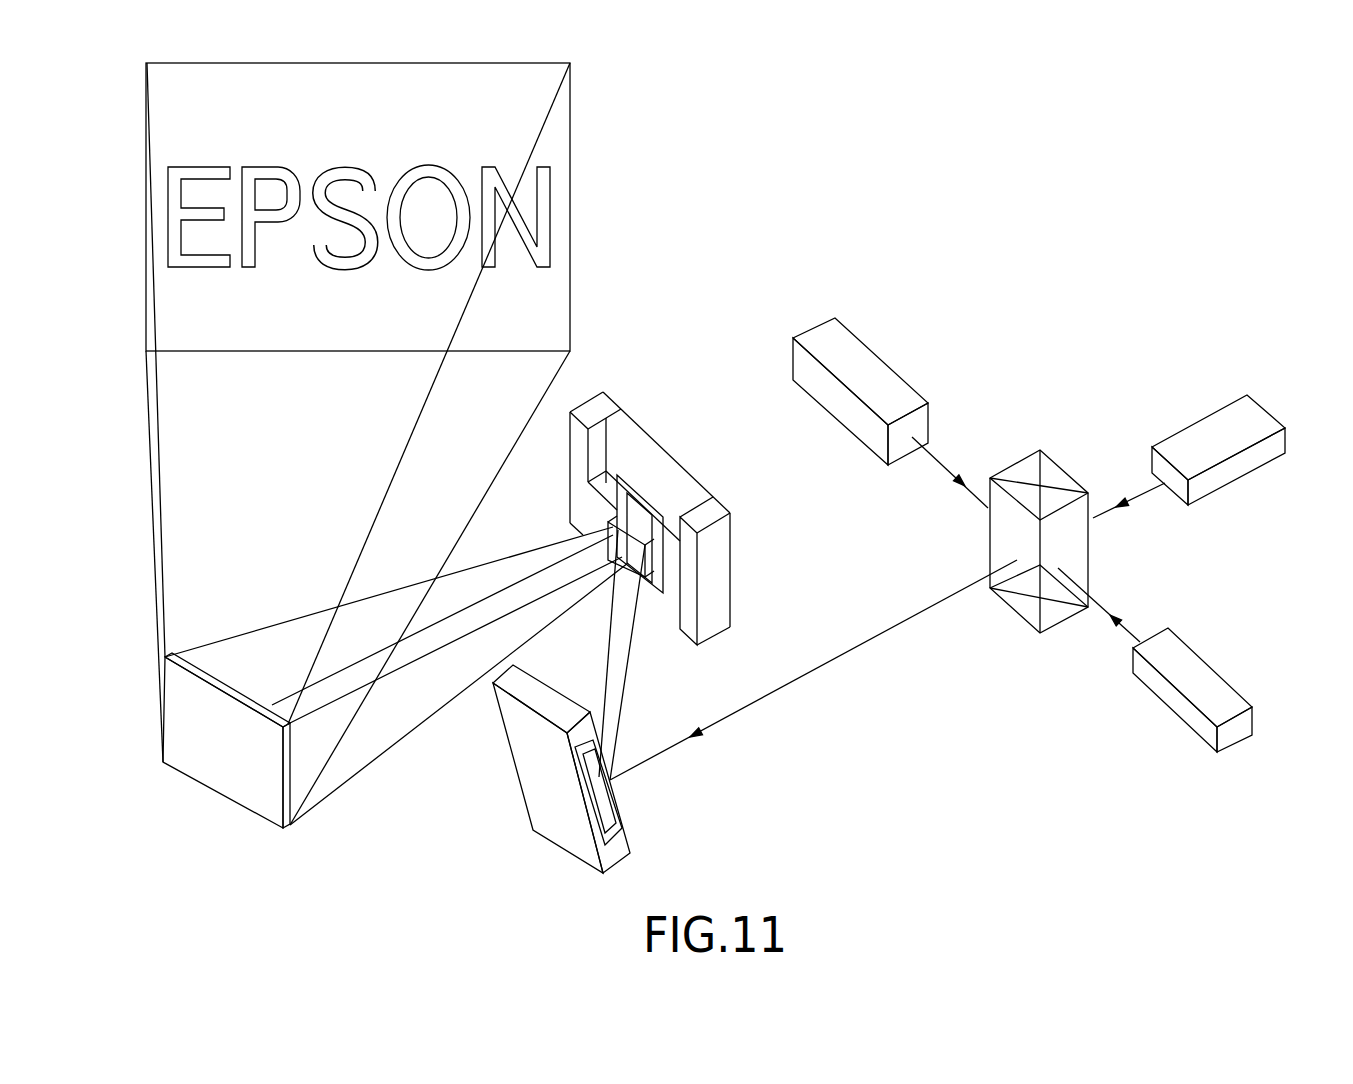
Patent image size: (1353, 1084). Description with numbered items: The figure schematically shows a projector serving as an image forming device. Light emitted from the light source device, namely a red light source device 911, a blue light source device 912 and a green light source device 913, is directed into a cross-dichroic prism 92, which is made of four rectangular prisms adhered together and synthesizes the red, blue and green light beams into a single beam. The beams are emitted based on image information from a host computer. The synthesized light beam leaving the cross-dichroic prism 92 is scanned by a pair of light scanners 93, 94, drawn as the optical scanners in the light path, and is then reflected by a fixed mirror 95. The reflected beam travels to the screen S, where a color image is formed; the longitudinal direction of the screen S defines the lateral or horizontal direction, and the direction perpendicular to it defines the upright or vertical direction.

The screen S is at (572, 166).
The cross-dichroic prism 92 is at (1053, 477).
The light scanner 93 is at (545, 797).
The light scanner 94 is at (595, 408).
The fixed mirror 95 is at (213, 767).
The red light source device 911 is at (1200, 683).
The blue light source device 912 is at (852, 358).
The green light source device 913 is at (1210, 433).